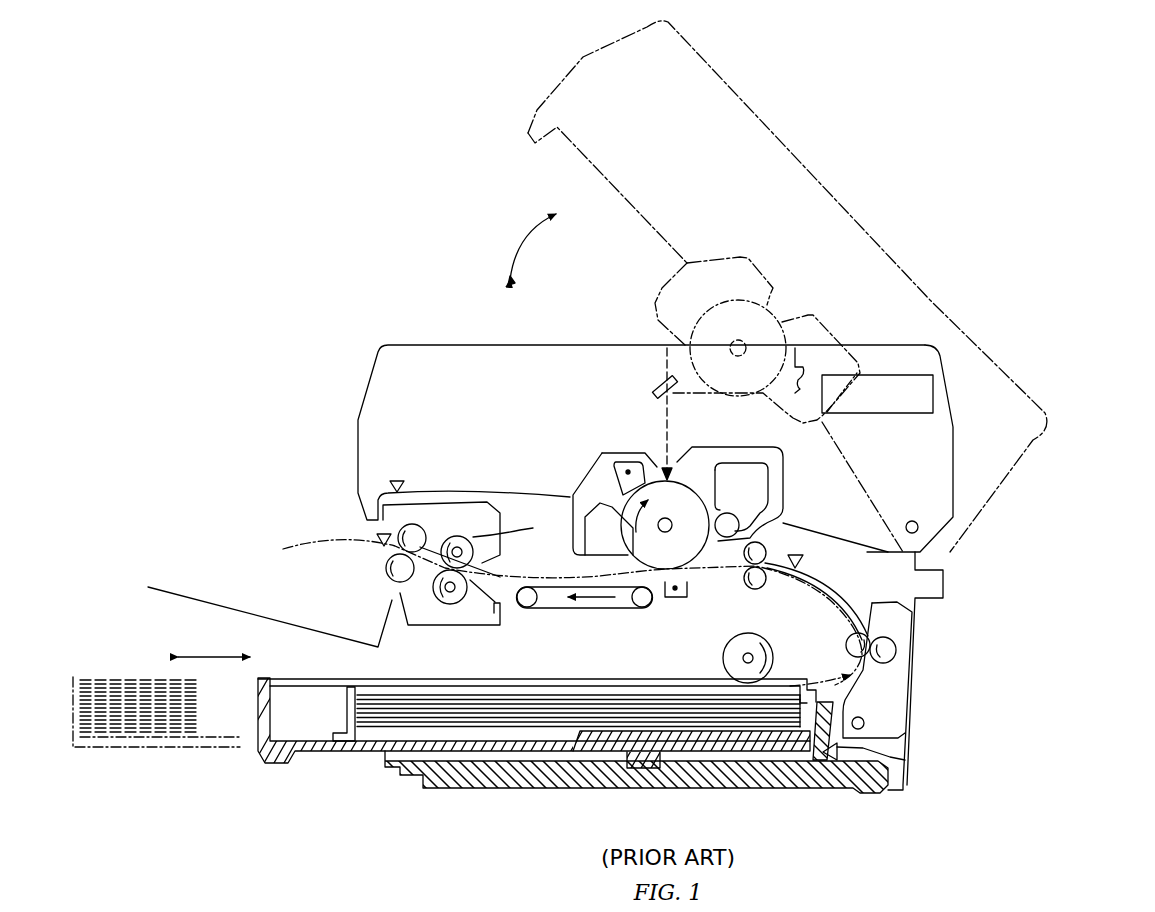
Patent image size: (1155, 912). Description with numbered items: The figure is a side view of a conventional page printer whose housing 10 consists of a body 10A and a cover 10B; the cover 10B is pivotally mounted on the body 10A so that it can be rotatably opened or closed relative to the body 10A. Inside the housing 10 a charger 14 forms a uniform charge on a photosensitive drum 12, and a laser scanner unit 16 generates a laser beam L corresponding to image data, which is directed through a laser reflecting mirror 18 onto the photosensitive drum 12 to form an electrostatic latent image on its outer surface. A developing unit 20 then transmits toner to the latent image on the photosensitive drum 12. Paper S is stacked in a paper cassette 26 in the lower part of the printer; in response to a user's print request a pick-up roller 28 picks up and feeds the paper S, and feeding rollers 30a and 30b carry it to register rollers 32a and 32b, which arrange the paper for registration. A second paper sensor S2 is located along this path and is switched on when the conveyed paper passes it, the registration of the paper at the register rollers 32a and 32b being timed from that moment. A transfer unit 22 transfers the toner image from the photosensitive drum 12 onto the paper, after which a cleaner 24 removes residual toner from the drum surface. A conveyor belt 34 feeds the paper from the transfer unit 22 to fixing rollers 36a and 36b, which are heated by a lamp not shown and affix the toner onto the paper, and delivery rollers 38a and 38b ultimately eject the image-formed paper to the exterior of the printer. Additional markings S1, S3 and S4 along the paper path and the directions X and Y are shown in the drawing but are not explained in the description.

The housing 10 is at (376, 377).
The body 10A is at (1062, 592).
The cover 10B is at (858, 212).
The photosensitive drum 12 is at (690, 561).
The charger 14 is at (628, 468).
The laser scanner unit 16 is at (875, 406).
The laser reflecting mirror 18 is at (658, 380).
The laser beam L is at (670, 422).
The developing unit 20 is at (745, 464).
The transfer unit 22 is at (670, 600).
The cleaner 24 is at (598, 500).
The paper cassette 26 is at (517, 682).
The paper S is at (566, 707).
The pick-up roller 28 is at (724, 658).
The feeding roller 30a is at (848, 641).
The feeding roller 30b is at (898, 654).
The register roller 32a is at (768, 546).
The register roller 32b is at (757, 589).
The conveyor belt 34 is at (600, 610).
The fixing roller 36a is at (472, 538).
The fixing roller 36b is at (448, 603).
The delivery roller 38a is at (418, 525).
The delivery roller 38b is at (392, 578).
The sheet position 1 S1 is at (842, 752).
The second paper sensor S2 is at (805, 560).
The sheet position 3 S3 is at (378, 538).
The sheet position 4 S4 is at (395, 480).
The X direction X is at (227, 657).
The Y direction Y is at (156, 696).